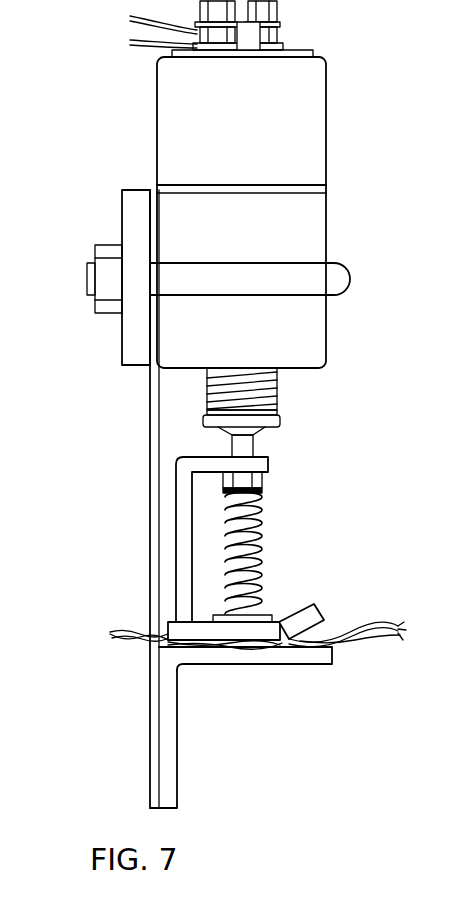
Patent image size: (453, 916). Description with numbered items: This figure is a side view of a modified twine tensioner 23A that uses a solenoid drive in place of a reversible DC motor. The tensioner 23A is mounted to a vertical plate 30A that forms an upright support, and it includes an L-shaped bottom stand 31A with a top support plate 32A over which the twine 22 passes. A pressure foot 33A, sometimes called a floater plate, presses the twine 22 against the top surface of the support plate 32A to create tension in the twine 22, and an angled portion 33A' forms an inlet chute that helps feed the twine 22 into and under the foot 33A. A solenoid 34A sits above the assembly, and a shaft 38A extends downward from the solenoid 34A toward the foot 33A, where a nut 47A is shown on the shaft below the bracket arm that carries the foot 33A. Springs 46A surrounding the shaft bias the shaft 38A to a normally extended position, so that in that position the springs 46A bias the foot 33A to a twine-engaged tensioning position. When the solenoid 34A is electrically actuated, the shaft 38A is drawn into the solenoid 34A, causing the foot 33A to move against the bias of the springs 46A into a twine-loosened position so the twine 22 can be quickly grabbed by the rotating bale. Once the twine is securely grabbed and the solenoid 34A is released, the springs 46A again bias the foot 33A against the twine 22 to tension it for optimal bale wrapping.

The modified twine tensioner 23A is at (113, 117).
The solenoid 34A is at (326, 123).
The vertical plate 30A is at (150, 443).
The shaft 38A is at (247, 448).
The nut 47A is at (252, 470).
The springs 46A is at (240, 528).
The foot 33A is at (250, 585).
The angled portion 33A' is at (328, 597).
The twine 22 is at (383, 628).
The top support plate 32A is at (300, 665).
The L-shaped bottom stand 31A is at (177, 750).